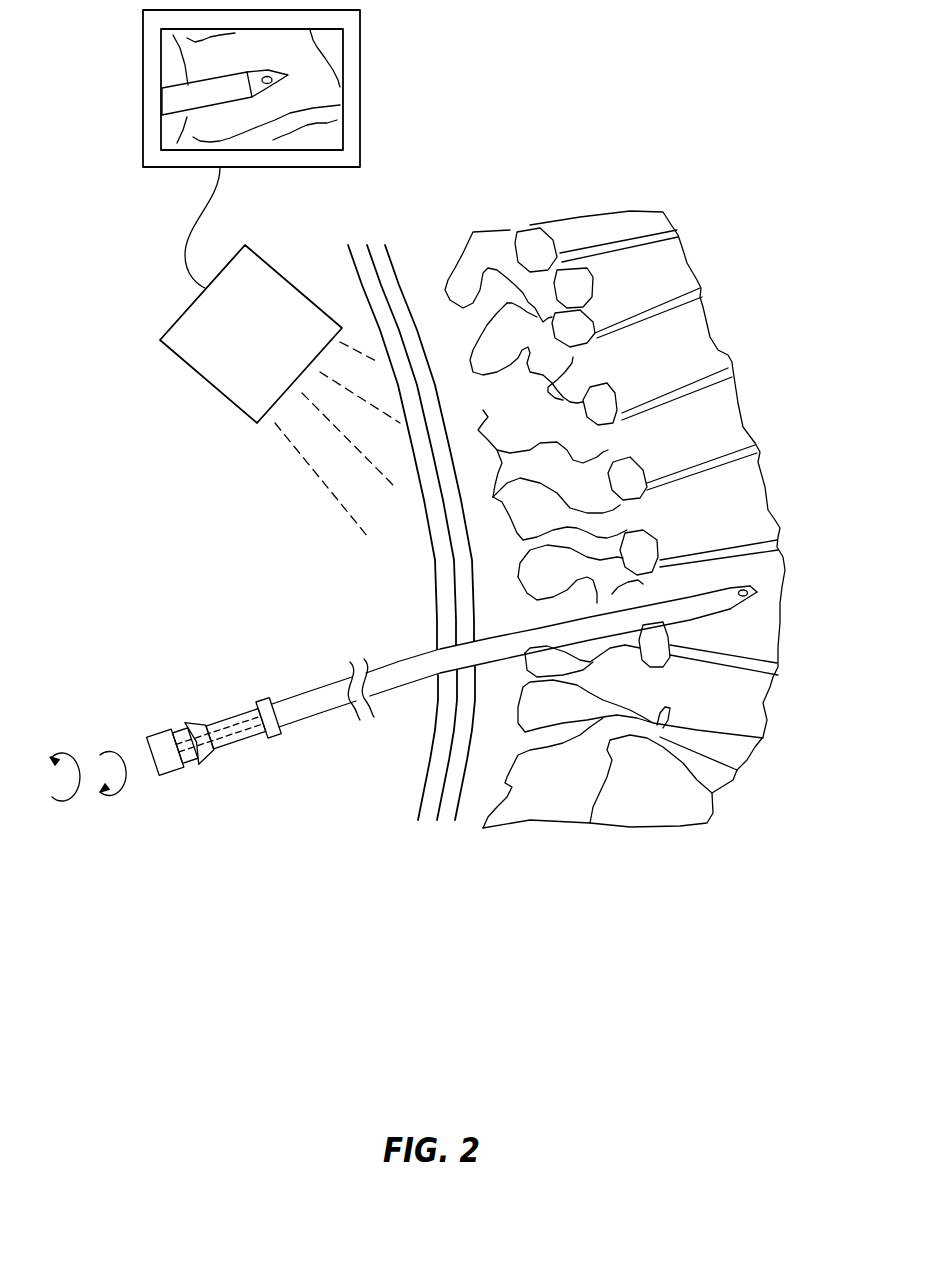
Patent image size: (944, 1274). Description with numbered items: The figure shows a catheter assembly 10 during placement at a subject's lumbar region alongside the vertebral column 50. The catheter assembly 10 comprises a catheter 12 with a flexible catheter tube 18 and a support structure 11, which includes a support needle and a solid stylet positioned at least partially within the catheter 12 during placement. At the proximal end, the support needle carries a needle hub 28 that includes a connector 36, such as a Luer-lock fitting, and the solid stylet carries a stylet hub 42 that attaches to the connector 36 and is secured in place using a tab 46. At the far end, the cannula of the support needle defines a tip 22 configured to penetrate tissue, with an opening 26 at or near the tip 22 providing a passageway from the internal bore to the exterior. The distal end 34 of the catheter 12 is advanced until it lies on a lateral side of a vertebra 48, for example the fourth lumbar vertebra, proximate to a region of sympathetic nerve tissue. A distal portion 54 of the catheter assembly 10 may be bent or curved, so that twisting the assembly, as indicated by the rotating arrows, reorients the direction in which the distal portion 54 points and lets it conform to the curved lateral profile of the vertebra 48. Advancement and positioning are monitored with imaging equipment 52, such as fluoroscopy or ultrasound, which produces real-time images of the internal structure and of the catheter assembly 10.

The catheter assembly 10 is at (228, 613).
The support structure 11 is at (175, 746).
The catheter 12 is at (550, 633).
The flexible catheter tube 18 is at (308, 692).
The tip 22 is at (757, 592).
The opening 26 is at (758, 596).
The needle hub 28 is at (237, 733).
The distal end of the catheter 34 is at (765, 584).
The connector 36 is at (183, 763).
The stylet hub 42 is at (155, 733).
The tab 46 is at (188, 723).
The vertebra 48 is at (775, 557).
The vertebral column 50 is at (643, 519).
The imaging equipment 52 is at (215, 367).
The distal portion of the catheter assembly 54 is at (690, 570).